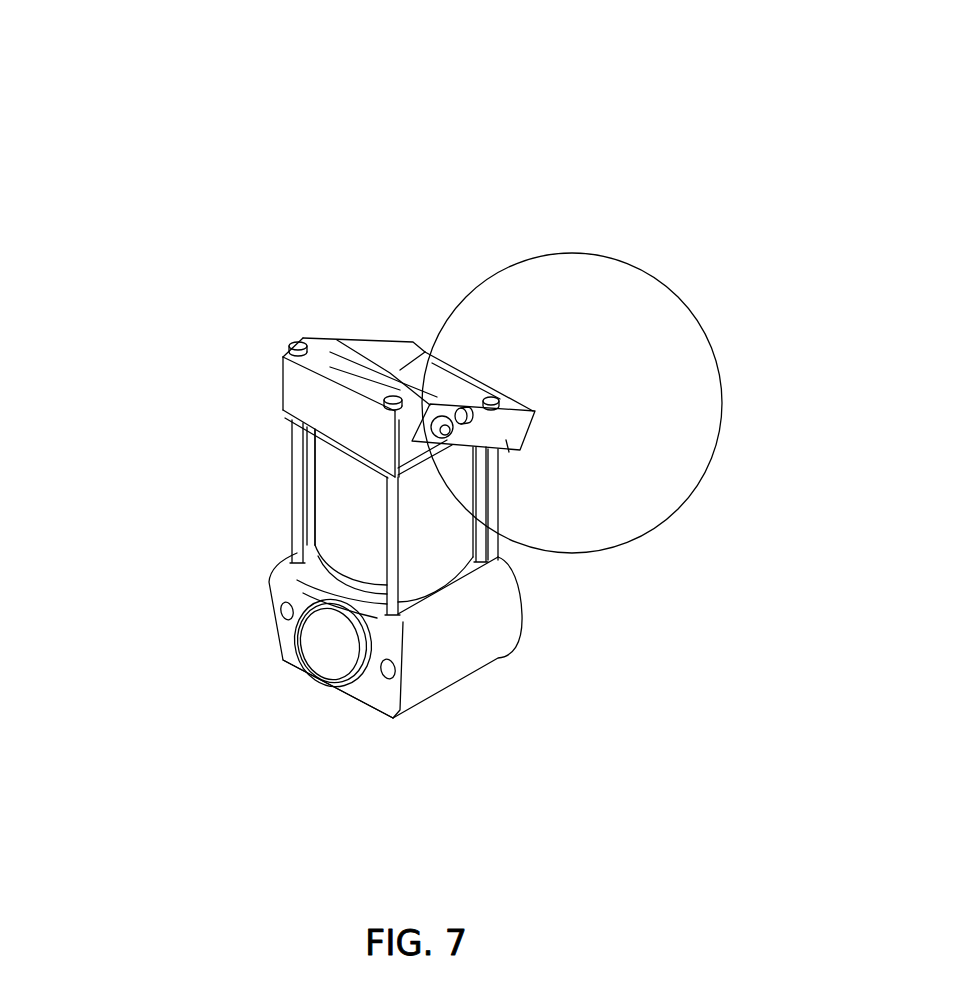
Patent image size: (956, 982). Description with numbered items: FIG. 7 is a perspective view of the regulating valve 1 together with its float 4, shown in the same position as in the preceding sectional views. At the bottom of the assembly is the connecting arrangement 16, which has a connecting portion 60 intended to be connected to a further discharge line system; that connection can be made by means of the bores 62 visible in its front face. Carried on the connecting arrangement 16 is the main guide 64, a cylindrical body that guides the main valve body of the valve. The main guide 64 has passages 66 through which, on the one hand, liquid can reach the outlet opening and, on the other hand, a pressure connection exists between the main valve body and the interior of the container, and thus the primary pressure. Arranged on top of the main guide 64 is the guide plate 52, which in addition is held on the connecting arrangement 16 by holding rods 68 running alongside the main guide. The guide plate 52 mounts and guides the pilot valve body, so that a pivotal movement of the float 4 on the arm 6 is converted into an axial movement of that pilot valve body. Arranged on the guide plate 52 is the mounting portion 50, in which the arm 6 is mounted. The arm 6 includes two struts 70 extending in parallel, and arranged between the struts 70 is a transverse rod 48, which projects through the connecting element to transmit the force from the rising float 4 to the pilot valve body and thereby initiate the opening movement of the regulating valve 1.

The regulating valve 1 is at (368, 47).
The float 4 is at (572, 403).
The arm 6 is at (372, 340).
The connecting arrangement 16 is at (475, 650).
The transverse rod 48 is at (433, 378).
The mounting portion 50 is at (283, 372).
The guide plate 52 is at (295, 442).
The connecting portion 60 is at (337, 690).
The bores 62 is at (281, 609).
The main guide 64 is at (452, 537).
The passages 66 is at (310, 585).
The holding rods 68 is at (497, 512).
The struts 70 is at (508, 455).